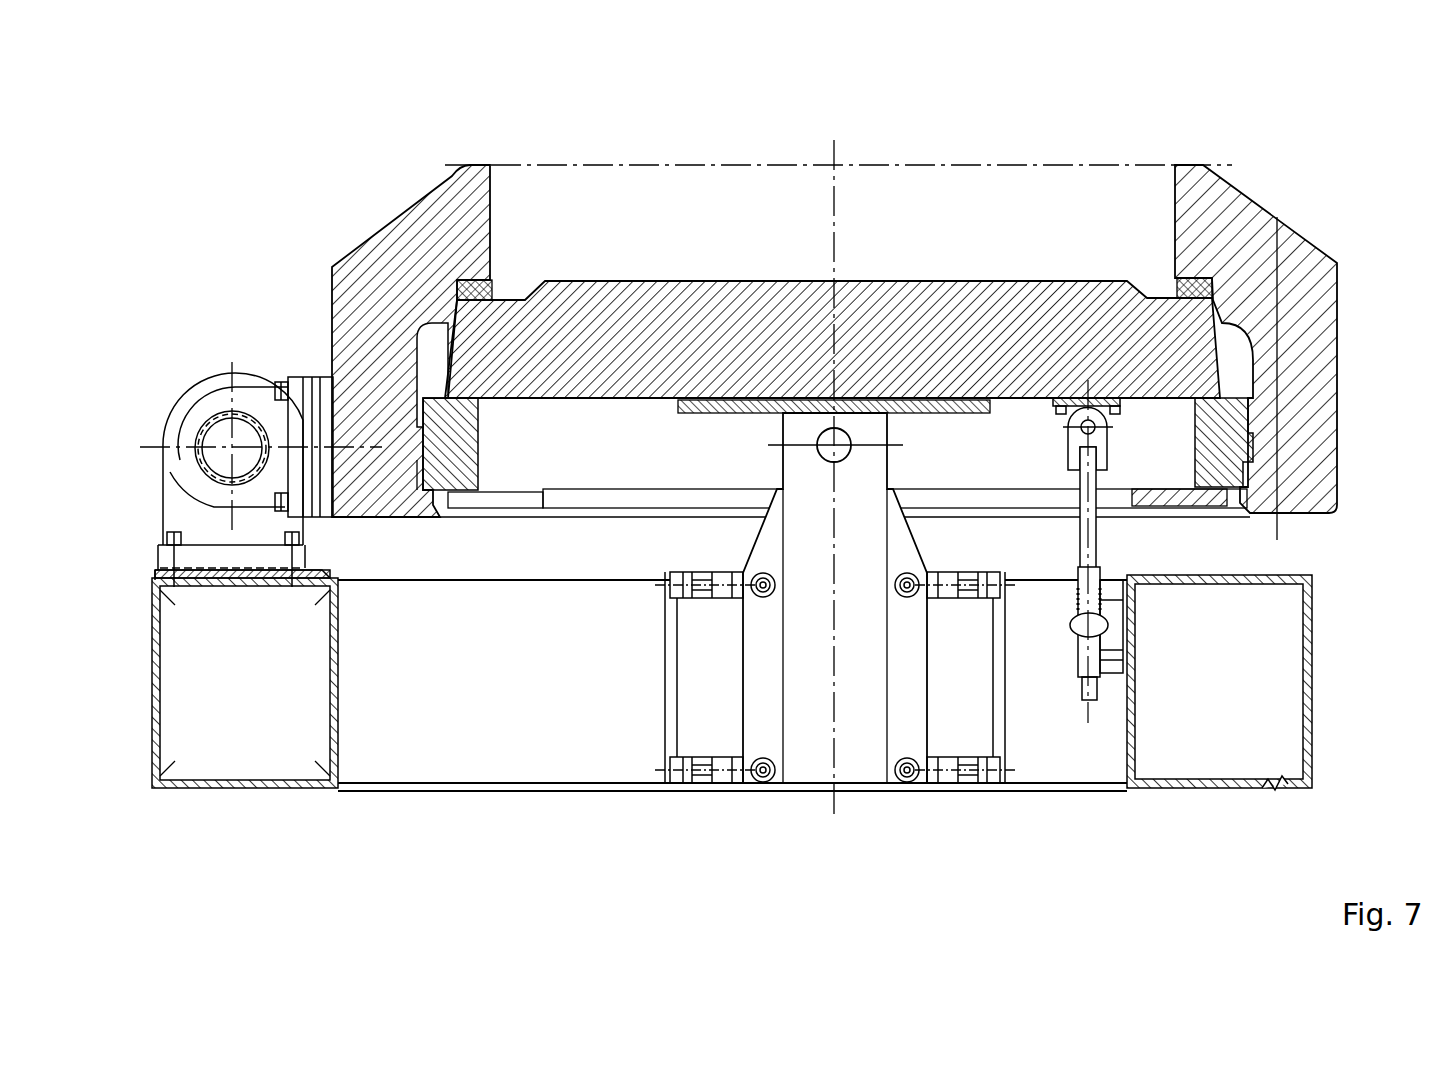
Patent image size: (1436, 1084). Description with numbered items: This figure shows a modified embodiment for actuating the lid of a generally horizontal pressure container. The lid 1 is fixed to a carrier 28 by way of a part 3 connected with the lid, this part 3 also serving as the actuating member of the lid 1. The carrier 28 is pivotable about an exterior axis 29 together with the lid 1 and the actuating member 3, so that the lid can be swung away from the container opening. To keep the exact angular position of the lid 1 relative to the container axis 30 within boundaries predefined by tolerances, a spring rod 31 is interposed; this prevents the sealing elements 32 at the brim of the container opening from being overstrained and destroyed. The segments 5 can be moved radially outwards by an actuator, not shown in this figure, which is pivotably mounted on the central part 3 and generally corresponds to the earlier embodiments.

The lid 1 is at (653, 340).
The part connected with the lid 3 is at (836, 715).
The segments 5 is at (445, 372).
The carrier 28 is at (245, 683).
The exterior axis 29 is at (230, 440).
The axis 30 is at (830, 200).
The spring rod 31 is at (1097, 533).
The sealing elements 32 is at (945, 265).